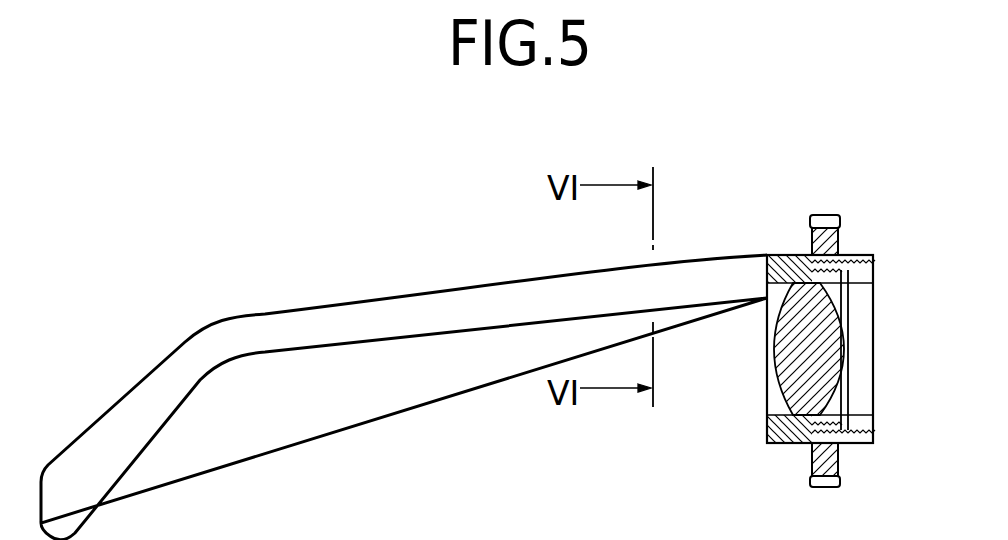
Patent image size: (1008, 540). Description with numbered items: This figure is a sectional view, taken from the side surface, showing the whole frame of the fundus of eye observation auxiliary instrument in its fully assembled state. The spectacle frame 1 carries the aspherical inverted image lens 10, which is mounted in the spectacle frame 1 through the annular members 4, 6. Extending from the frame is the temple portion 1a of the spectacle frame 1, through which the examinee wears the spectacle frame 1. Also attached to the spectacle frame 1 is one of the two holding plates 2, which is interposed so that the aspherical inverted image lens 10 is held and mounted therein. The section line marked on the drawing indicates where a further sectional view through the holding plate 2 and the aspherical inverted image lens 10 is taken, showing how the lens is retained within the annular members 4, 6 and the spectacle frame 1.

The spectacle frame 1 is at (824, 213).
The temple portion 1a is at (430, 322).
The holding plate 2 is at (842, 247).
The annular member 4 is at (780, 445).
The annular member 6 is at (854, 445).
The aspherical inverted image lens 10 is at (777, 362).